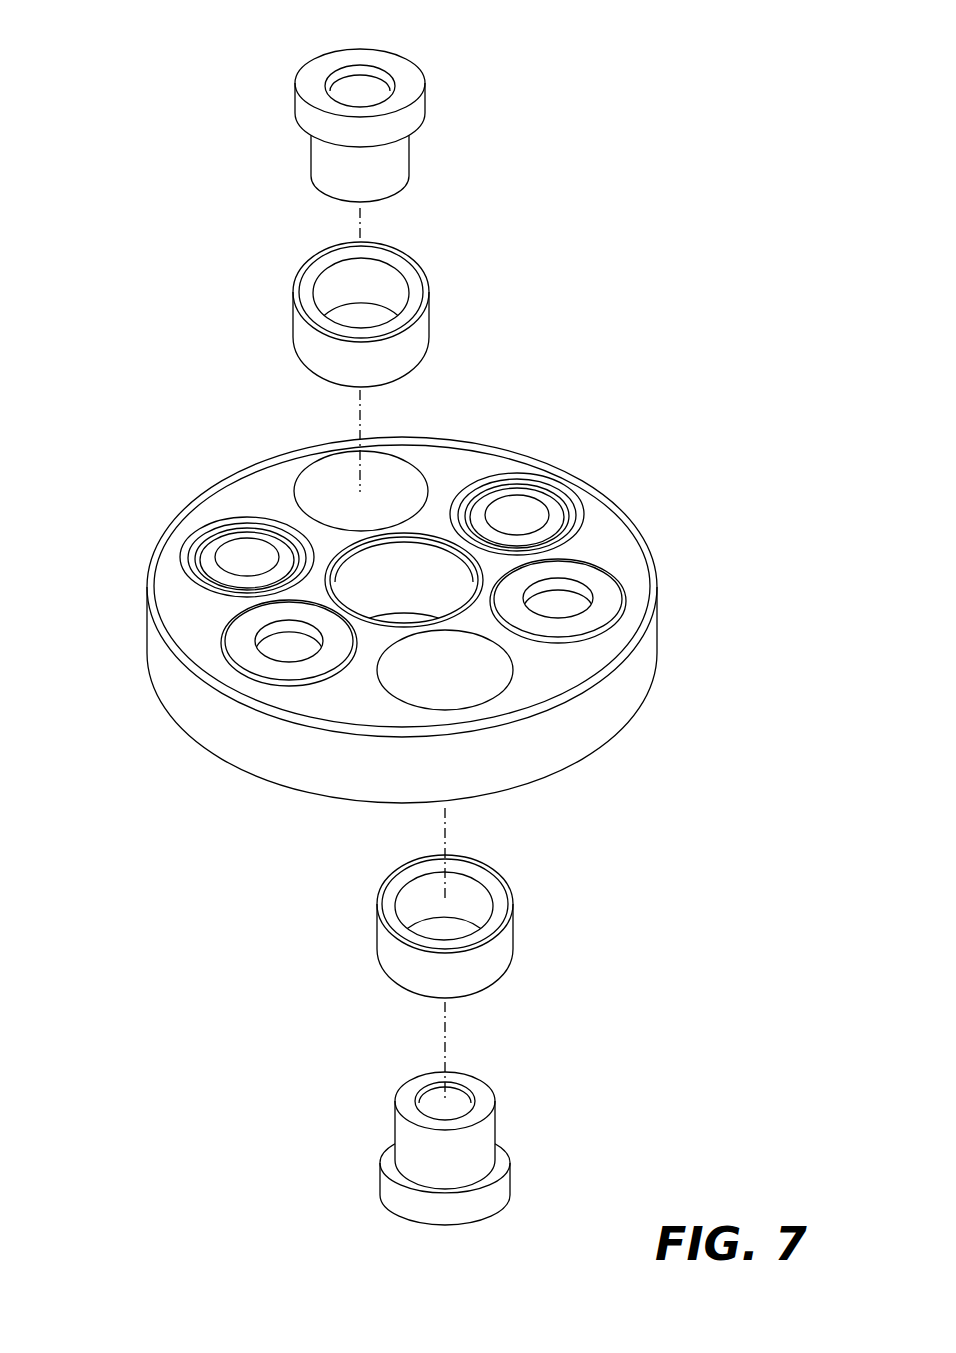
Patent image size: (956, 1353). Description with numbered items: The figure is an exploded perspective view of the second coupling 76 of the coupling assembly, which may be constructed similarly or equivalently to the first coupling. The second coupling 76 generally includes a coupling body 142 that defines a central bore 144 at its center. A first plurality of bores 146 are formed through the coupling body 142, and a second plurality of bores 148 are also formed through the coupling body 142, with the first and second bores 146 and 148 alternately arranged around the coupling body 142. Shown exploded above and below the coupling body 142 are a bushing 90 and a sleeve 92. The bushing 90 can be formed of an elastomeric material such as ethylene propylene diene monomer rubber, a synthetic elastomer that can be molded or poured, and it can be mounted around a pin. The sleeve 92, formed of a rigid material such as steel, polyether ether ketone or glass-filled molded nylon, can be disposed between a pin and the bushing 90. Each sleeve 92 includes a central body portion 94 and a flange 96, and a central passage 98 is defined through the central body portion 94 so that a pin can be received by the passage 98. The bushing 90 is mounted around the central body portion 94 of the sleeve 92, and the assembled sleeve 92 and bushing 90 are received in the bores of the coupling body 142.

The second coupling 76 is at (150, 221).
The bushing 90 is at (300, 330).
The sleeve 92 is at (395, 162).
The central body portion 94 is at (323, 153).
The flange 96 is at (408, 86).
The central passage 98 is at (367, 92).
The coupling body 142 is at (213, 727).
The central bore 144 is at (393, 588).
The first plurality of bores 146 is at (320, 492).
The second plurality of bores 148 is at (583, 513).